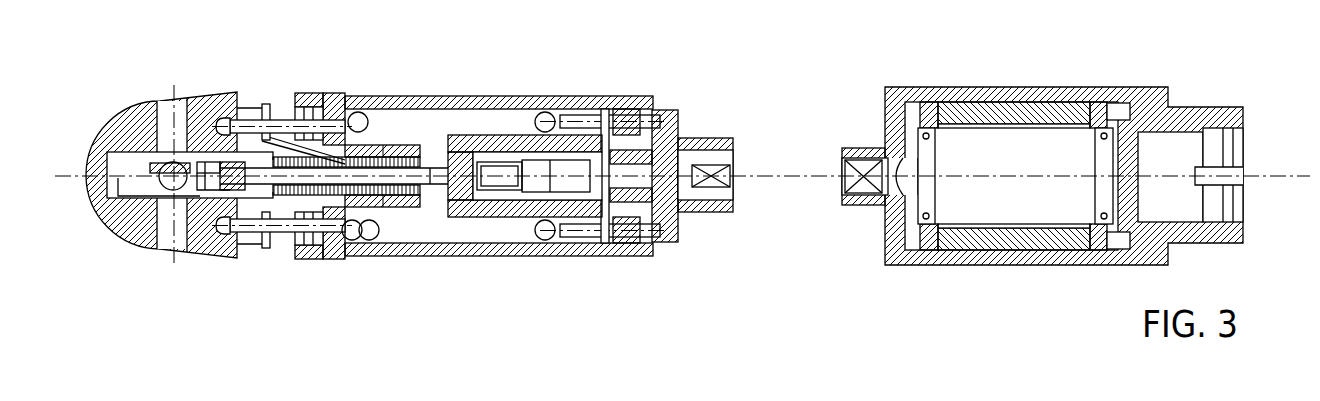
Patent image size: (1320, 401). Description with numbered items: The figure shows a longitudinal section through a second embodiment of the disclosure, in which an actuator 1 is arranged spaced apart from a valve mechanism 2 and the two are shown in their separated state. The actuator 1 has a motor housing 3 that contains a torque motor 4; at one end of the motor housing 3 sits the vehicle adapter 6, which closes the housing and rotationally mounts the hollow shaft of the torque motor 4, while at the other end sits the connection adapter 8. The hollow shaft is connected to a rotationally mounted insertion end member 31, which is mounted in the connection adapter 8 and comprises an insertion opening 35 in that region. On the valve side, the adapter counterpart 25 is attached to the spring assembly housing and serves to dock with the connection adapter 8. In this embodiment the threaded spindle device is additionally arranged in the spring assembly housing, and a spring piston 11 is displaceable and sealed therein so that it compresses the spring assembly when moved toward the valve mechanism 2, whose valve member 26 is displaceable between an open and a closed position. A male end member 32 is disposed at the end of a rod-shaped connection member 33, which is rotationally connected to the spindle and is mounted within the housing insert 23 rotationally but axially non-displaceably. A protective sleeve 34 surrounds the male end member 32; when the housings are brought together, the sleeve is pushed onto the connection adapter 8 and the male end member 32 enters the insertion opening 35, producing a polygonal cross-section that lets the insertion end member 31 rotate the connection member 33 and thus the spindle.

The actuator 1 is at (1051, 163).
The valve mechanism 2 is at (128, 82).
The motor housing 3 is at (1051, 163).
The torque motor 4 is at (965, 238).
The vehicle adapter 6 is at (1257, 168).
The connection adapter 8 is at (849, 123).
The spring piston 11 is at (485, 150).
The housing insert 23 is at (668, 228).
The adapter counterpart 25 is at (702, 222).
The valve member 26 is at (325, 222).
The insertion end member 31 is at (905, 195).
The male end member 32 is at (732, 172).
The connection member 33 is at (646, 175).
The protective sleeve 34 is at (732, 150).
The insertion opening 35 is at (843, 172).